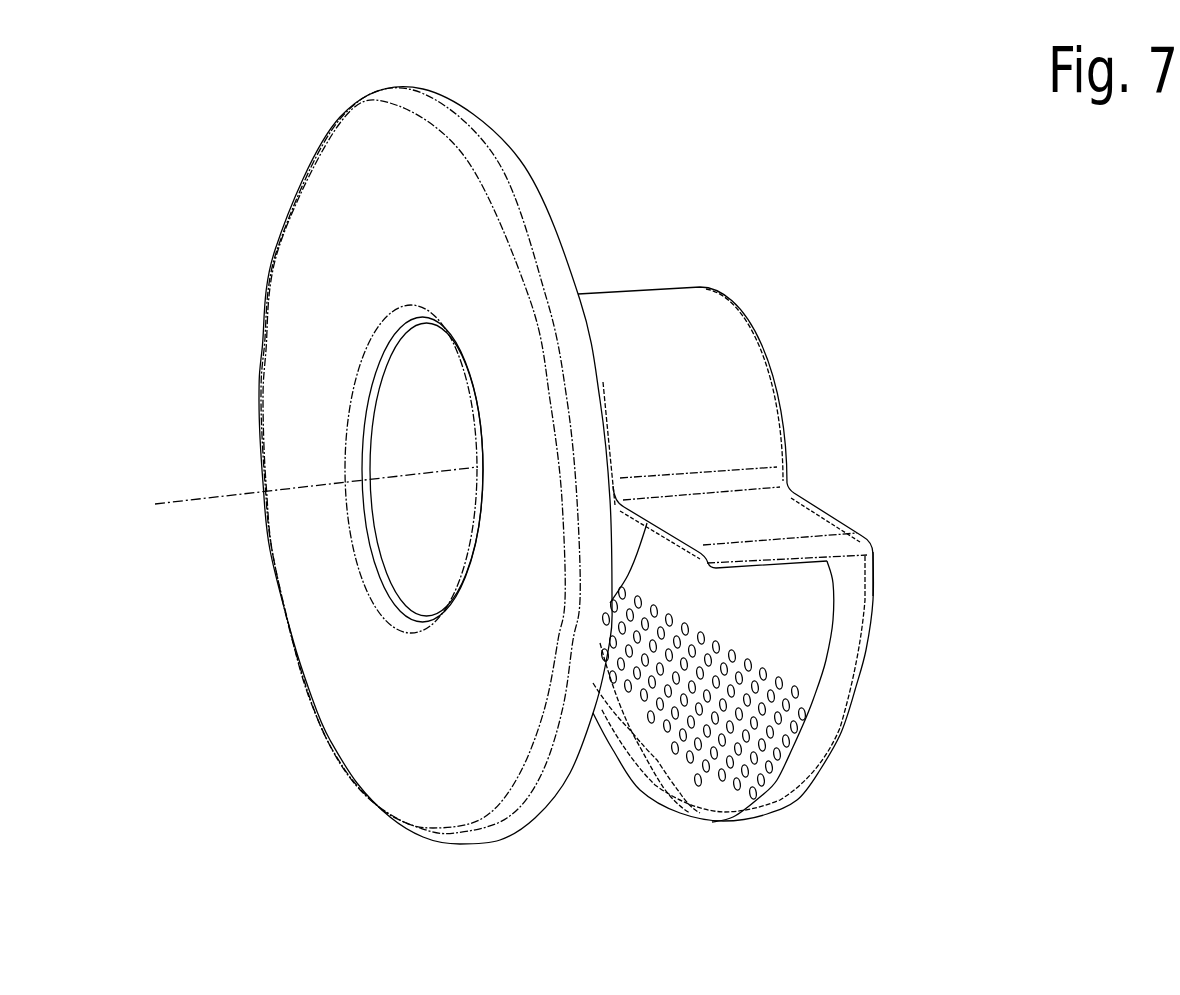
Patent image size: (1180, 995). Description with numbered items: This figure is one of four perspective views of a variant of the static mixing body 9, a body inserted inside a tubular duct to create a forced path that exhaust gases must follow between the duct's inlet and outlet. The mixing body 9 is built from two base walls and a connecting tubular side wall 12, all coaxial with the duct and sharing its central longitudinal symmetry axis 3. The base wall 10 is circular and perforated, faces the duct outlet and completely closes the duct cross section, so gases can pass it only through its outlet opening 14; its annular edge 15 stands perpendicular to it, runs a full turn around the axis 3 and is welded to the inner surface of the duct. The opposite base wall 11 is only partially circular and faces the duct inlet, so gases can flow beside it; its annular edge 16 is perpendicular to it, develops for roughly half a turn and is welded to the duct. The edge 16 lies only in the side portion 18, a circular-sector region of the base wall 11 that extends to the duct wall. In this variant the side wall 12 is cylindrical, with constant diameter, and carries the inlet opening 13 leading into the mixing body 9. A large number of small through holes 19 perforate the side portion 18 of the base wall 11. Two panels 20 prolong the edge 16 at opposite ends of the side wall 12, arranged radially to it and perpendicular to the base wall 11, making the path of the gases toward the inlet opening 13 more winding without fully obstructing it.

The central longitudinal symmetry axis 3 is at (172, 500).
The mixing body 9 is at (650, 483).
The base wall 10 is at (381, 465).
The base wall 11 is at (825, 513).
The tubular side wall 12 is at (645, 357).
The inlet opening 13 is at (657, 552).
The outlet opening 14 is at (390, 366).
The annular edge 15 is at (538, 215).
The annular edge 16 is at (823, 703).
The side portion 18 is at (795, 618).
The through holes 19 is at (698, 753).
The panels 20 is at (770, 512).